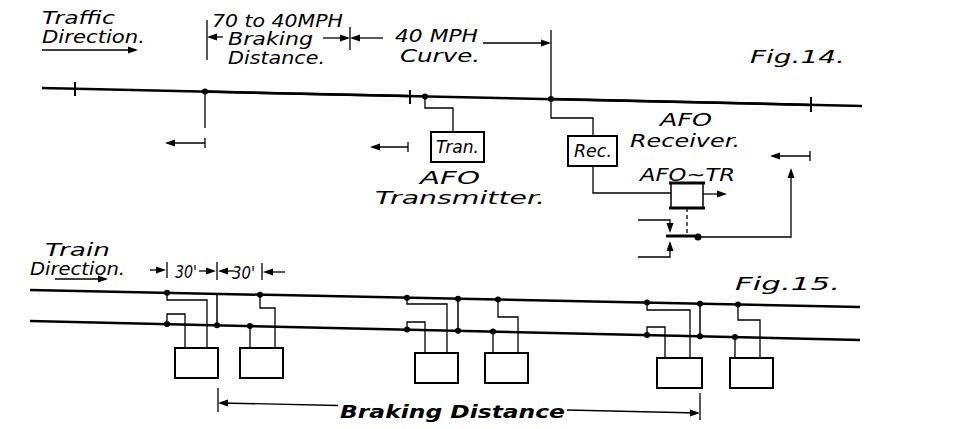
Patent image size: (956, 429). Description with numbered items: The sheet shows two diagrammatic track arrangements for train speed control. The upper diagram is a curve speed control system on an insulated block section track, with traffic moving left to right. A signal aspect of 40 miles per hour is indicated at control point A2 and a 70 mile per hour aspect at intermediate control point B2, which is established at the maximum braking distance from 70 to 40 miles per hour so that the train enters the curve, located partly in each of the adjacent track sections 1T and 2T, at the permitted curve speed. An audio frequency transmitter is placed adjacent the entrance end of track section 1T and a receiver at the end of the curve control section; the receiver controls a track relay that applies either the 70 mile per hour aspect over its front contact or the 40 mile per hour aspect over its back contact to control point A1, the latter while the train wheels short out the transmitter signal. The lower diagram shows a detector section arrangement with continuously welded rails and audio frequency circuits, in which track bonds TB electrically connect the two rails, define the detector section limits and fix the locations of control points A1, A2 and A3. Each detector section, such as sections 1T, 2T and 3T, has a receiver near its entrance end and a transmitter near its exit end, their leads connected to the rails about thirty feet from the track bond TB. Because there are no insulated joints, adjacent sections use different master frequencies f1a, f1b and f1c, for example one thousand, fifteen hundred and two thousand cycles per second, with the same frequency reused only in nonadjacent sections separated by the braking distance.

In FIG. 14, the control point A1 is at (821, 95).
In FIG. 15, the control point A1 is at (691, 310).
In FIG. 14, the control point A2 is at (406, 88).
In FIG. 15, the control point A2 is at (459, 305).
In FIG. 14, the control point A3 is at (73, 80).
In FIG. 15, the control point A3 is at (227, 301).
In FIG. 14, the intermediate control point B2 is at (202, 98).
In FIG. 14, the track section 1T is at (681, 92).
In FIG. 15, the track section 1T is at (577, 319).
In FIG. 14, the track section 2T is at (307, 84).
In FIG. 15, the track section 2T is at (335, 314).
In FIG. 15, the track section 3T is at (104, 310).
In FIG. 15, the track bond TB is at (477, 318).
In FIG. 14, the 70 mile per hour signal aspect 70 is at (417, 176).
In FIG. 14, the 40 mile per hour signal aspect 40 is at (522, 196).
In FIG. 15, the transmission frequency f1a is at (175, 369).
In FIG. 15, the transmission frequency f1b is at (528, 372).
In FIG. 15, the transmission frequency f1c is at (283, 370).